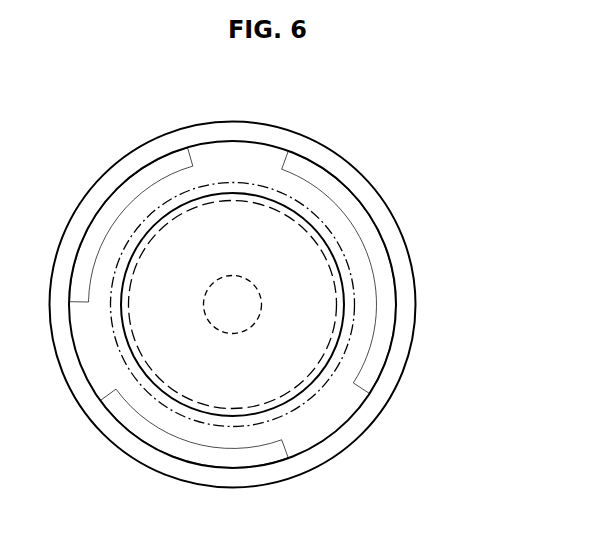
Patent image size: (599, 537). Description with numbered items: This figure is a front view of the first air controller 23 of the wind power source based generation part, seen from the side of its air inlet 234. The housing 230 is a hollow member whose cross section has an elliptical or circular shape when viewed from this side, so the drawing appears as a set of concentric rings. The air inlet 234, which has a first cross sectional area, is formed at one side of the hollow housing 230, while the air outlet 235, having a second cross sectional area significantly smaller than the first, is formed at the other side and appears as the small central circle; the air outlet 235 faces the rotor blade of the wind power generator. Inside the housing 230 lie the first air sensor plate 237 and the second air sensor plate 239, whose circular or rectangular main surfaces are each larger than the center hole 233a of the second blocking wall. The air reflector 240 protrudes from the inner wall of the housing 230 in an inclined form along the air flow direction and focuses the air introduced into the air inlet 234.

The first air controller 23 is at (118, 126).
The housing 230 is at (170, 132).
The air inlet 234 is at (241, 141).
The air reflector 240 is at (393, 280).
The center hole 233a is at (321, 217).
The second air sensor plate 239 is at (297, 210).
The first air sensor plate 237 is at (340, 240).
The air outlet 235 is at (253, 330).